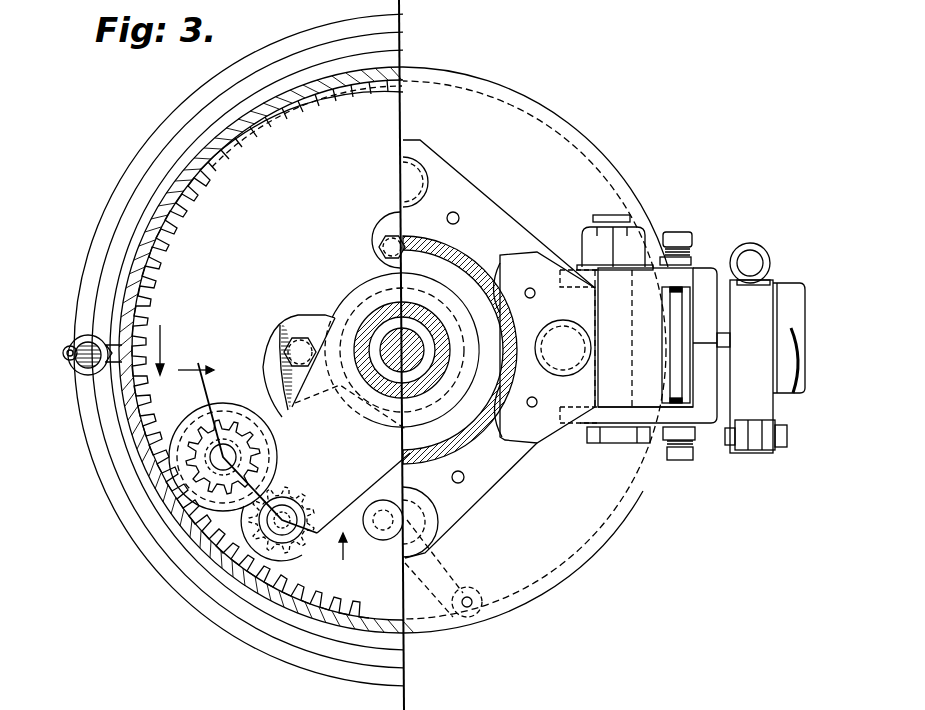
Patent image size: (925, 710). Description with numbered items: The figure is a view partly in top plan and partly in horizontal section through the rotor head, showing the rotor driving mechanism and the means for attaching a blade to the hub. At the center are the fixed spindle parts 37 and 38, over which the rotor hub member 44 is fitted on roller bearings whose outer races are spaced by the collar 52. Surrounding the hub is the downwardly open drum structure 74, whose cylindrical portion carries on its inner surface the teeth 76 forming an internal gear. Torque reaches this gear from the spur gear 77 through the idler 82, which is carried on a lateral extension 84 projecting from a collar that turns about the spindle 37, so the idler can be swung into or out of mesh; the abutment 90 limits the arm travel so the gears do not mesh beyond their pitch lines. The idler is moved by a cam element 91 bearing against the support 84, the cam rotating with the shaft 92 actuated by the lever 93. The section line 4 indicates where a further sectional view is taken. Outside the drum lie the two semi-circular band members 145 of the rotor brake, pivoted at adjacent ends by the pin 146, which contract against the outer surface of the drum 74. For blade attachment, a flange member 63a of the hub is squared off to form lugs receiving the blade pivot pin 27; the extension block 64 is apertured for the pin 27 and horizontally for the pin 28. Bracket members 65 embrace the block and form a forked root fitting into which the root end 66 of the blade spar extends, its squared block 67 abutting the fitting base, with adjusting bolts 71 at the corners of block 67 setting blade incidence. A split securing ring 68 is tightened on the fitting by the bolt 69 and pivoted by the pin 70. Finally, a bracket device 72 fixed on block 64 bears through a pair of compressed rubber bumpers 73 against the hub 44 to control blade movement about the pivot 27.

The section line 4- 4 is at (294, 464).
The blade pivot pin 27 is at (563, 348).
The pin 28 is at (613, 443).
The spindle part 37 is at (362, 330).
The spindle part 38 is at (397, 343).
The rotor hub member 44 is at (450, 273).
The collar 52 is at (457, 257).
The flange member 63a is at (453, 183).
The extension block 64 is at (643, 280).
The bracket members 65 is at (702, 268).
The blade spar root end 66 is at (792, 297).
The squared block 67 is at (677, 373).
The split securing ring 68 is at (751, 366).
The bolt 69 is at (750, 244).
The pivot pin 70 is at (782, 450).
The adjusting bolts 71 is at (680, 235).
The bracket device 72 is at (530, 263).
The rubber bumpers 73 is at (495, 267).
The drum structure 74 is at (152, 222).
The teeth 76 is at (180, 218).
The spur gear 77 is at (227, 428).
The idler 82 is at (310, 567).
The lateral extension 84 is at (351, 416).
The abutment 90 is at (270, 350).
The cam element 91 is at (407, 478).
The shaft 92 is at (385, 500).
The lever 93 is at (470, 588).
The semi-circular band members 145 is at (103, 283).
The pin 146 is at (80, 368).